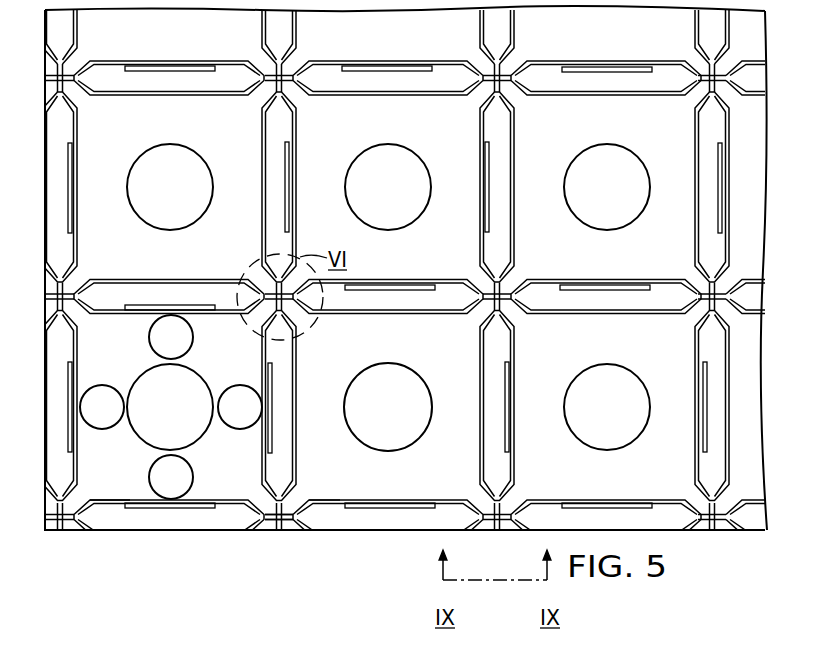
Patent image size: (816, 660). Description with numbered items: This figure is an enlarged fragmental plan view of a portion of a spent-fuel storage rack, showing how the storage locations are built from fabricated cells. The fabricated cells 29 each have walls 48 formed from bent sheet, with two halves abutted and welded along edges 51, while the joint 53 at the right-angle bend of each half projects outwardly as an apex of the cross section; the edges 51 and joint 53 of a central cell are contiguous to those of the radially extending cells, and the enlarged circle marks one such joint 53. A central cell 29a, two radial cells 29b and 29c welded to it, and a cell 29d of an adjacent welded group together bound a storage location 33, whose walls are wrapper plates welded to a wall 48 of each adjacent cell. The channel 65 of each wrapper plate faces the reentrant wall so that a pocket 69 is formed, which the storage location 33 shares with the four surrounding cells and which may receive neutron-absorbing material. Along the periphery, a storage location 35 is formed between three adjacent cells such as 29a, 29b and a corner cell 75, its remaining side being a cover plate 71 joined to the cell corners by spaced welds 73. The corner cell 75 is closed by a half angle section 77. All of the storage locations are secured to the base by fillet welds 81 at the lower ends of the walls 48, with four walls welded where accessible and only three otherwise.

The cell 29 is at (540, 492).
The central cell 29a is at (401, 135).
The radial cell 29b is at (613, 341).
The radial cell 29c is at (598, 41).
The cell of adjacent group 29d is at (760, 195).
The storage location 33 is at (612, 135).
The peripheral storage location 35 is at (382, 488).
The wall 48 is at (410, 282).
The abutted edge 51 is at (268, 72).
The joint 53 is at (265, 285).
The channel 65 is at (511, 195).
The pocket 69 is at (500, 143).
The cover plate 71 is at (323, 505).
The weld 73 is at (270, 517).
The corner cell 75 is at (130, 490).
The half angle section 77 is at (100, 510).
The fillet weld 81 is at (503, 397).